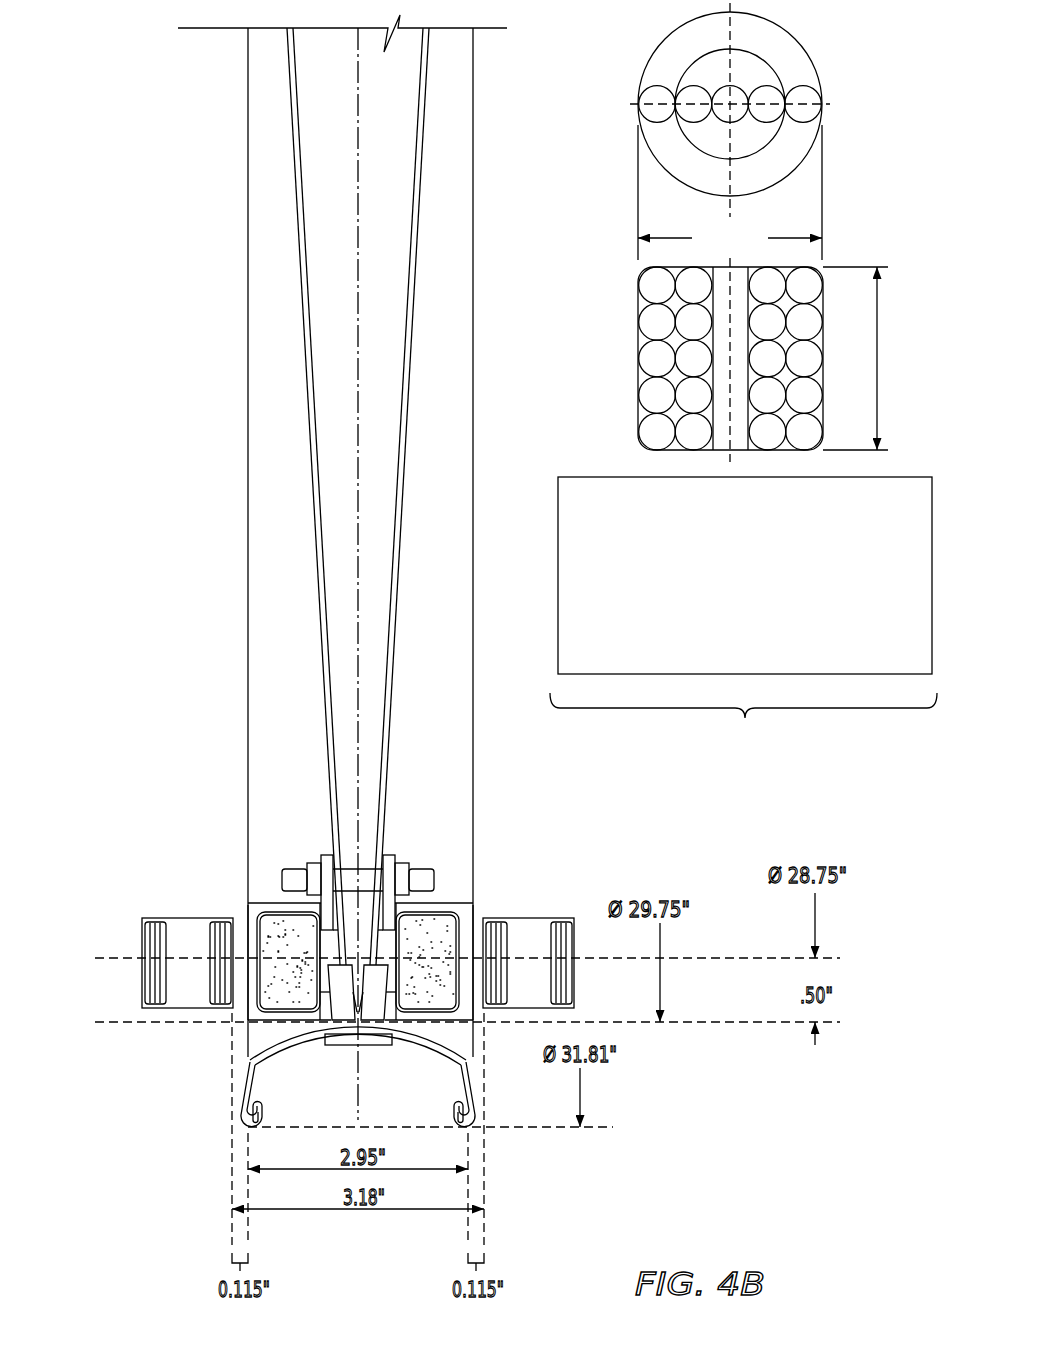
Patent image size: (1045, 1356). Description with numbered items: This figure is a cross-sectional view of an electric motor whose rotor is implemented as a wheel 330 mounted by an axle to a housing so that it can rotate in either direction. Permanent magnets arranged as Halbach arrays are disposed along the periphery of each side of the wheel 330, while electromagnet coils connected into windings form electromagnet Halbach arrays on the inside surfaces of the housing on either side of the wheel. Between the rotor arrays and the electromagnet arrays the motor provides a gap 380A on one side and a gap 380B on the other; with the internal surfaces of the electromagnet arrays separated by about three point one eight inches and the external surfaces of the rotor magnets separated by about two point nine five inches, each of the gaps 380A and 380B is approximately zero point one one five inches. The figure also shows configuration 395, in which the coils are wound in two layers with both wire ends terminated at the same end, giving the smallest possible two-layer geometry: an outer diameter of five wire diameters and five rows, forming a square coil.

The wheel 330 is at (420, 243).
The gap 380A is at (207, 850).
The gap 380B is at (562, 853).
The configuration 395 is at (577, 913).